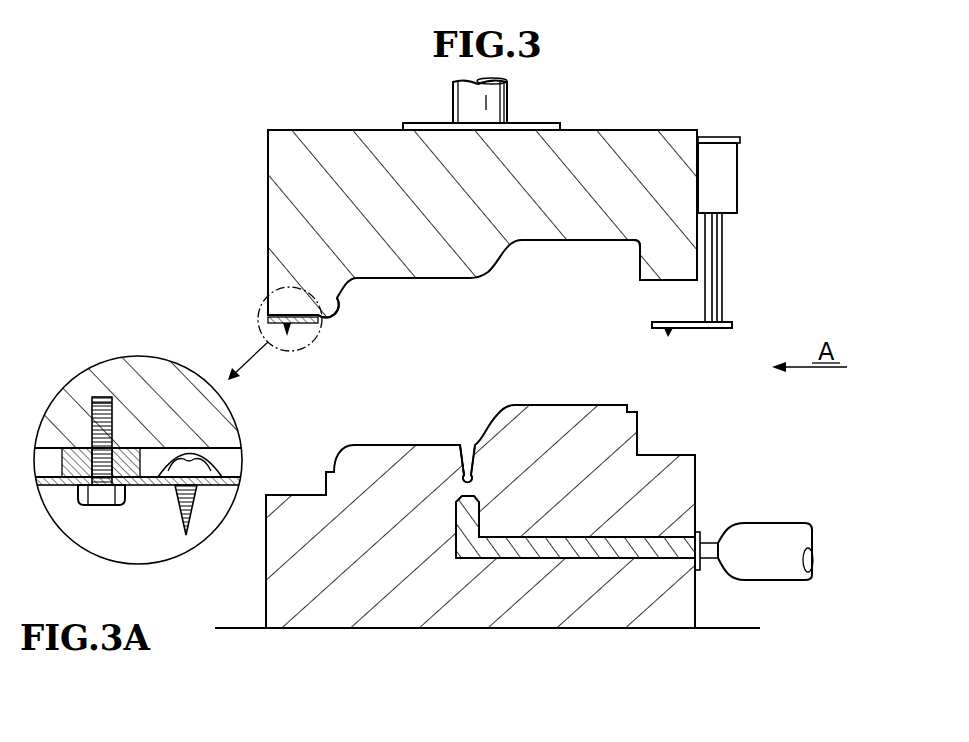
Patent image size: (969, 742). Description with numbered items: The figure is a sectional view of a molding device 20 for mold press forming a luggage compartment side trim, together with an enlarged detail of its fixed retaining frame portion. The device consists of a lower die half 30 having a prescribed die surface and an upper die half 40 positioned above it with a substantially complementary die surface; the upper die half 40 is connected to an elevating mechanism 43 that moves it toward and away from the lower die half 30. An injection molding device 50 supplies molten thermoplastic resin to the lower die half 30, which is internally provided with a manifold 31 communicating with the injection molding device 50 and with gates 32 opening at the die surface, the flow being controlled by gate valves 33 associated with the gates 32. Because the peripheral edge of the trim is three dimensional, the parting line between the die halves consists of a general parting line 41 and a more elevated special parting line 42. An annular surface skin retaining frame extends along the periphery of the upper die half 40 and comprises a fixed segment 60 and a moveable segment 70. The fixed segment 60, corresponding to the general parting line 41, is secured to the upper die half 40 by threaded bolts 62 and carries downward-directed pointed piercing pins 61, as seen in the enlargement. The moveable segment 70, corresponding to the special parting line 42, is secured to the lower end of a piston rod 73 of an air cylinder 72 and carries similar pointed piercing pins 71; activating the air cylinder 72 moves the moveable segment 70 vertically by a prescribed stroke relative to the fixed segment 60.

In FIG. 3, the molding device 20 is at (240, 234).
In FIG. 3, the upper die half 40 is at (277, 268).
In FIG. 3A, the upper die half 40 is at (138, 375).
In FIG. 3, the general parting line 41 is at (335, 300).
In FIG. 3, the special parting line 42 is at (640, 283).
In FIG. 3, the elevating mechanism 43 is at (508, 91).
In FIG. 3, the air cylinder 72 is at (727, 160).
In FIG. 3, the piston rod 73 is at (722, 258).
In FIG. 3, the moveable segment 70 is at (700, 330).
In FIG. 3, the pointed piercing pins 71 is at (663, 338).
In FIG. 3, the fixed segment 60 is at (308, 338).
In FIG. 3A, the fixed segment 60 is at (72, 482).
In FIG. 3A, the pointed piercing pins 61 is at (193, 507).
In FIG. 3A, the threaded bolts 62 is at (88, 447).
In FIG. 3, the lower die half 30 is at (326, 607).
In FIG. 3, the manifold 31 is at (522, 557).
In FIG. 3, the gates 32 is at (468, 448).
In FIG. 3, the gate valves 33 is at (455, 472).
In FIG. 3, the injection molding device 50 is at (758, 528).